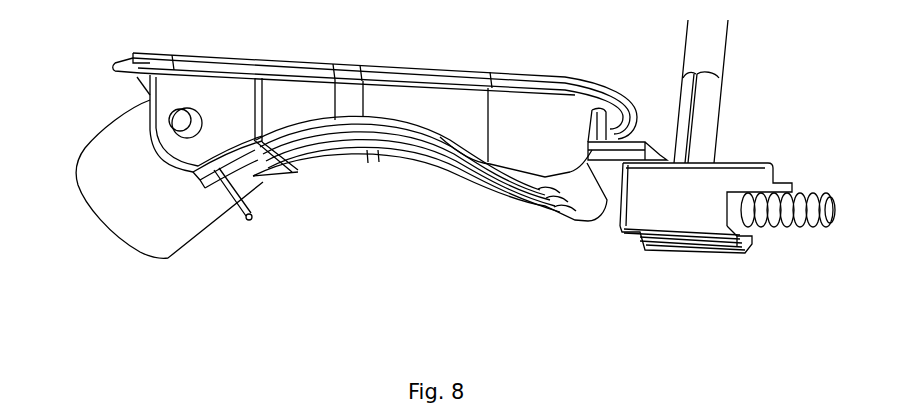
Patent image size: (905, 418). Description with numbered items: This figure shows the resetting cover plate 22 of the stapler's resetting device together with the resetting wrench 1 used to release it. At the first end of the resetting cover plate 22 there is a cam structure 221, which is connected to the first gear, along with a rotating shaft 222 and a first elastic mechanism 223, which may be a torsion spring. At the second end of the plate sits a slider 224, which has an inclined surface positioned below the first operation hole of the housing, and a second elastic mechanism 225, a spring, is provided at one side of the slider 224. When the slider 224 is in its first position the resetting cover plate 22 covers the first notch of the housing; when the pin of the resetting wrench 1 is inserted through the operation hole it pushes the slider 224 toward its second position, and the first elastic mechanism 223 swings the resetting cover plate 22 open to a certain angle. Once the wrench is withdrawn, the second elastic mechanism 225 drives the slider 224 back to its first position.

The resetting cover plate 22 is at (154, 72).
The cam structure 221 is at (123, 149).
The rotating shaft 222 is at (176, 130).
The first elastic mechanism 223 is at (220, 196).
The resetting wrench 1 is at (696, 108).
The slider 224 is at (704, 221).
The second elastic mechanism 225 is at (824, 221).